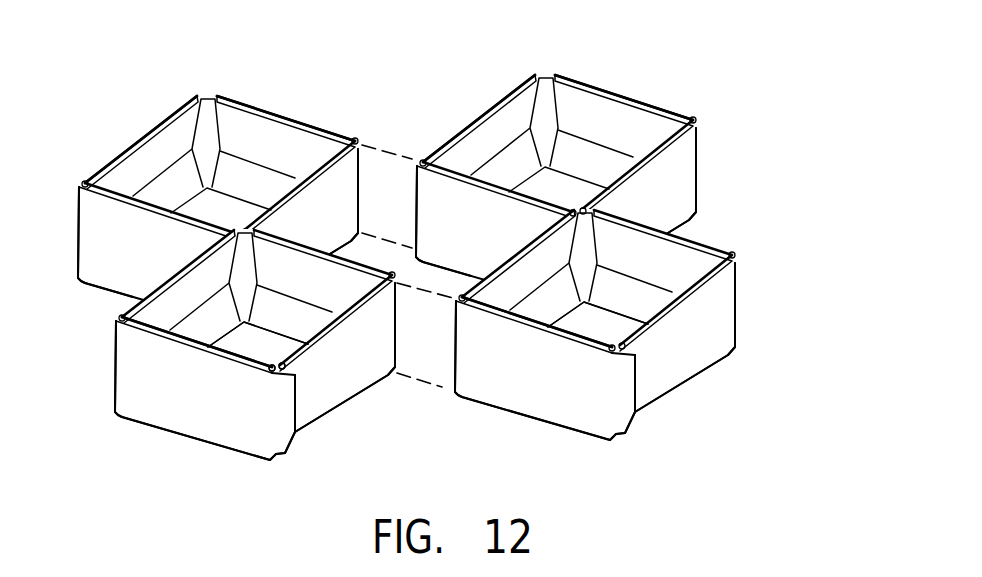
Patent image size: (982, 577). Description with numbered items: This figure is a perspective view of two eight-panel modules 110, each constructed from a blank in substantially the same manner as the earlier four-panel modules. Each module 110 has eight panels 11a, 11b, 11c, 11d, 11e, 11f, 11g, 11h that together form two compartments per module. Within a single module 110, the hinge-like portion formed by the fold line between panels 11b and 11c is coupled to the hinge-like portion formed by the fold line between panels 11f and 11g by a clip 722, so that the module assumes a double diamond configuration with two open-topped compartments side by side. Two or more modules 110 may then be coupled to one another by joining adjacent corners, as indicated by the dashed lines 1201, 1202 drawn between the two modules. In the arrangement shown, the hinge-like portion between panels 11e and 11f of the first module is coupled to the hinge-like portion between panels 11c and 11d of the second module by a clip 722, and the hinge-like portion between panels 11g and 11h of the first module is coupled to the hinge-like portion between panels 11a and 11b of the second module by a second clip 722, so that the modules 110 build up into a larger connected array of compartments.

The module 110 is at (146, 478).
The panel 11a is at (216, 411).
The panel 11b is at (136, 299).
The panel 11c is at (138, 257).
The panel 11d is at (125, 172).
The panel 11e is at (268, 118).
The panel 11f is at (326, 234).
The panel 11g is at (300, 284).
The panel 11h is at (364, 387).
The clip 722 is at (279, 366).
The dashed line 1201 is at (391, 150).
The dashed line 1202 is at (432, 394).